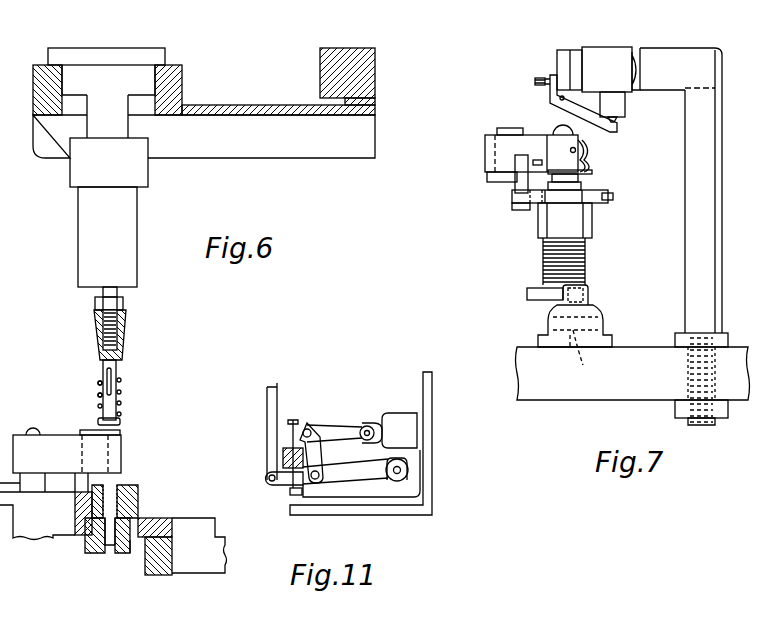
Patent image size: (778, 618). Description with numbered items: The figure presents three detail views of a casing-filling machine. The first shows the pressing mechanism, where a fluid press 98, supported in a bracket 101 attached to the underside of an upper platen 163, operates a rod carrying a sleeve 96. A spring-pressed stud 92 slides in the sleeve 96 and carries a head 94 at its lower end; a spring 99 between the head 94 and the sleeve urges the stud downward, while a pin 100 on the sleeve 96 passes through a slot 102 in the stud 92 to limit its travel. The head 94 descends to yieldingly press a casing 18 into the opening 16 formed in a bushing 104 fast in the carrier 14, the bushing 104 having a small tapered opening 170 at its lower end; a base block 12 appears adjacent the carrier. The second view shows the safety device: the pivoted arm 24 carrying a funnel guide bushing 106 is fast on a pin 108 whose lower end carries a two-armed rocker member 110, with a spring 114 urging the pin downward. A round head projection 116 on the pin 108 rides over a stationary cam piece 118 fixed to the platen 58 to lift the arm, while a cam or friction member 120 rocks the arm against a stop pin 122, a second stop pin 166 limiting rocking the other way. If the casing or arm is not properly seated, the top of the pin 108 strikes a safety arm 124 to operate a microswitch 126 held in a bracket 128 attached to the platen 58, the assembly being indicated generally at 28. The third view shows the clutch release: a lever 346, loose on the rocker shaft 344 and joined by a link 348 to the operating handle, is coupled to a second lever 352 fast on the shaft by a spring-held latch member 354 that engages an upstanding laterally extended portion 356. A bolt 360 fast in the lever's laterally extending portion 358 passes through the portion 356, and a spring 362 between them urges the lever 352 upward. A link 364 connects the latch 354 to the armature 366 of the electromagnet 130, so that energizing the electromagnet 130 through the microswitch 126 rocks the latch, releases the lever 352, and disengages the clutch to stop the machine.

In FIG. 6, the upper platen 163 is at (320, 72).
In FIG. 6, the bracket 101 is at (233, 150).
In FIG. 6, the fluid press 98 is at (109, 224).
In FIG. 6, the sleeve 96 is at (126, 333).
In FIG. 6, the pin 100 is at (117, 371).
In FIG. 6, the spring 99 is at (123, 403).
In FIG. 6, the slot 102 is at (99, 383).
In FIG. 6, the spring-pressed stud 92 is at (99, 396).
In FIG. 6, the head 94 is at (99, 418).
In FIG. 6, the pivoted arm 24 is at (60, 460).
In FIG. 7, the pivoted arm 24 is at (485, 159).
In FIG. 6, the opening 16 is at (125, 500).
In FIG. 6, the carrier 14 is at (148, 518).
In FIG. 7, the carrier 14 is at (595, 225).
In FIG. 6, the base block 12 is at (186, 546).
In FIG. 6, the casing 18 is at (98, 545).
In FIG. 6, the tapered opening 170 is at (112, 548).
In FIG. 6, the bushing 104 is at (125, 553).
In FIG. 11, the link 348 is at (272, 408).
In FIG. 11, the second lever 352 is at (268, 482).
In FIG. 11, the lever 346 is at (358, 480).
In FIG. 11, the rocker shaft 344 is at (410, 471).
In FIG. 11, the electromagnet 130 is at (402, 425).
In FIG. 11, the armature 366 is at (363, 422).
In FIG. 11, the link 364 is at (345, 432).
In FIG. 11, the latch member 354 is at (313, 438).
In FIG. 11, the laterally extended portion 356 is at (290, 448).
In FIG. 11, the spring 362 is at (283, 456).
In FIG. 11, the laterally extending portion 358 is at (294, 494).
In FIG. 11, the bolt 360 is at (293, 420).
In FIG. 7, the bracket 128 is at (712, 152).
In FIG. 7, the microswitch 126 is at (605, 55).
In FIG. 7, the assembly 28 is at (537, 51).
In FIG. 7, the safety arm 124 is at (613, 133).
In FIG. 7, the bushing 106 is at (497, 129).
In FIG. 7, the pin 108 is at (556, 128).
In FIG. 7, the stop pin 166 is at (515, 180).
In FIG. 7, the stop pin 122 is at (553, 179).
In FIG. 7, the spring 114 is at (585, 266).
In FIG. 7, the two-armed rocker member 110 is at (527, 294).
In FIG. 7, the second stationary cam or friction member 120 is at (595, 305).
In FIG. 7, the stationary cam piece 118 is at (545, 336).
In FIG. 7, the platen 58 is at (527, 372).
In FIG. 7, the round head projection 116 is at (594, 359).